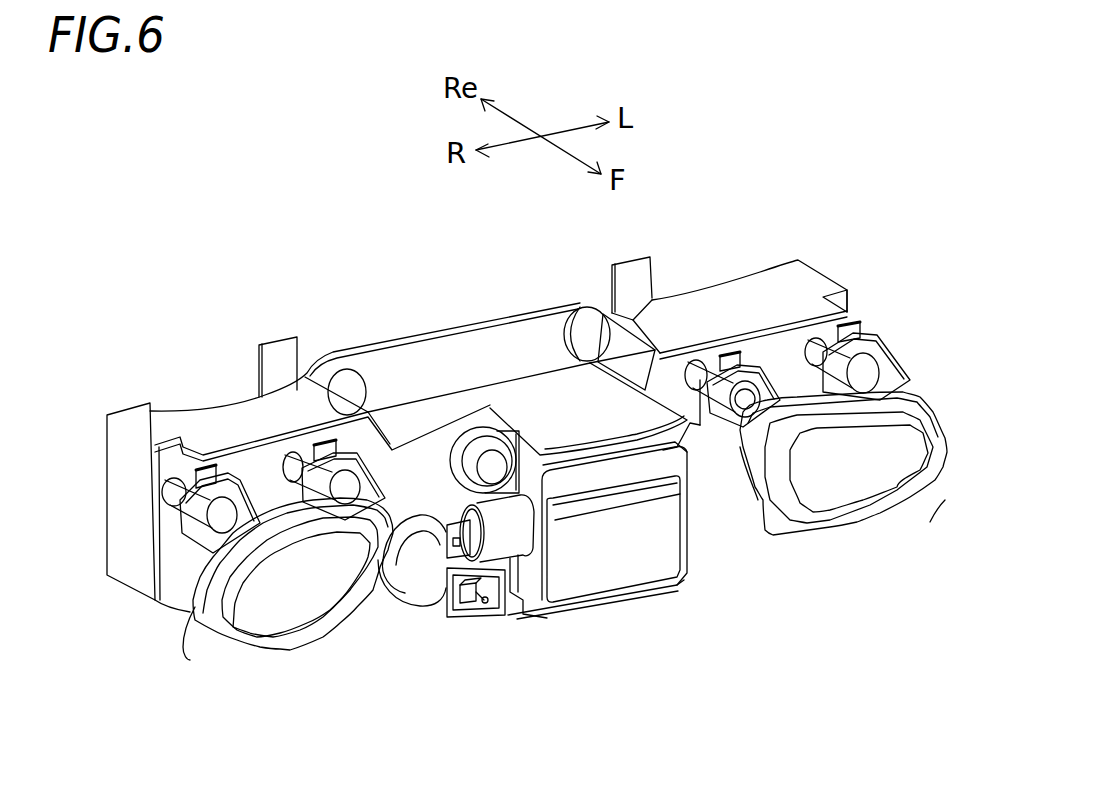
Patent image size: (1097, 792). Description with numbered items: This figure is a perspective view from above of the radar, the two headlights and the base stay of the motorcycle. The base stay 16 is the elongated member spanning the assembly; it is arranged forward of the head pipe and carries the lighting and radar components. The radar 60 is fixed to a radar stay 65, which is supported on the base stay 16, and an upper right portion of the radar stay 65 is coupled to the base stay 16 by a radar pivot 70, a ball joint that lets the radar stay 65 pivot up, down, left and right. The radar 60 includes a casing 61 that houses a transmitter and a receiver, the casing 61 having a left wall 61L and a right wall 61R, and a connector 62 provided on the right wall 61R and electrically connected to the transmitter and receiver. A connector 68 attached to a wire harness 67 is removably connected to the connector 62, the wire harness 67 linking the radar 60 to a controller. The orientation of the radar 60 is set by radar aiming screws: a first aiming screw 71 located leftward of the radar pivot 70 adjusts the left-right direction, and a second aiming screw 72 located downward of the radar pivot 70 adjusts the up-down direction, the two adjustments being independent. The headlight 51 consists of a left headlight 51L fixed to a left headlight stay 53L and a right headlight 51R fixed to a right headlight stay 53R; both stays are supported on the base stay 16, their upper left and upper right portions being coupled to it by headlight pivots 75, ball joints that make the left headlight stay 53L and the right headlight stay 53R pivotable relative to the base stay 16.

The base stay 16 is at (390, 363).
The radar pivot 70 is at (490, 457).
The first aiming screw 71 is at (740, 395).
The headlight pivot 75 is at (345, 487).
The headlight 51 is at (925, 519).
The left headlight 51L is at (875, 505).
The right headlight 51R is at (312, 622).
The left headlight stay 53L is at (782, 508).
The right headlight stay 53R is at (190, 660).
The radar 60 is at (675, 543).
The casing 61 is at (638, 552).
The left wall 61L is at (690, 515).
The right wall 61R is at (523, 590).
The connector 62 is at (523, 527).
The radar stay 65 is at (610, 608).
The wire harness 67 is at (417, 618).
The connector 68 is at (498, 613).
The second aiming screw 72 is at (470, 607).